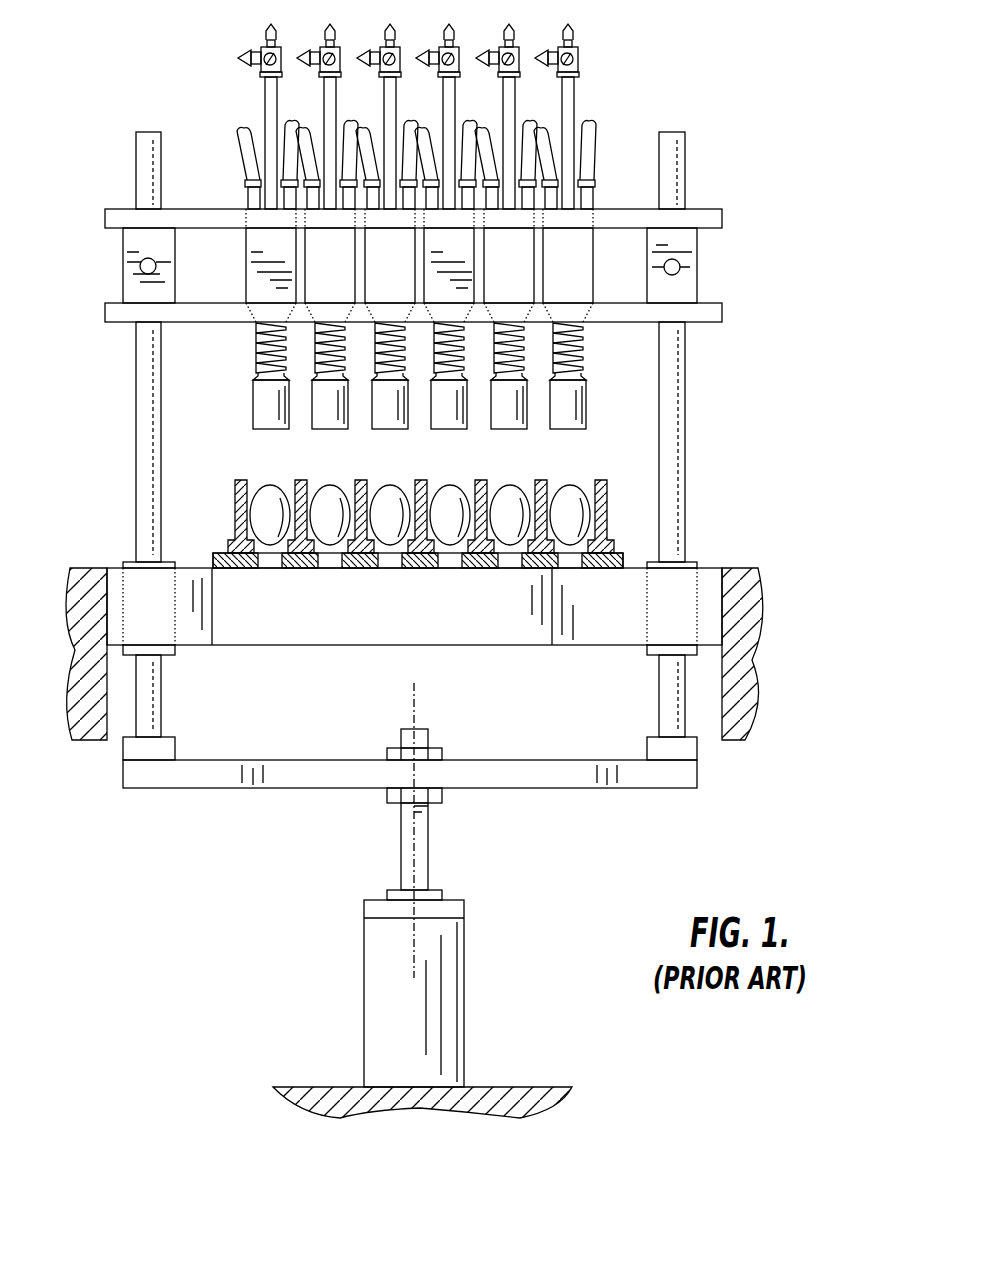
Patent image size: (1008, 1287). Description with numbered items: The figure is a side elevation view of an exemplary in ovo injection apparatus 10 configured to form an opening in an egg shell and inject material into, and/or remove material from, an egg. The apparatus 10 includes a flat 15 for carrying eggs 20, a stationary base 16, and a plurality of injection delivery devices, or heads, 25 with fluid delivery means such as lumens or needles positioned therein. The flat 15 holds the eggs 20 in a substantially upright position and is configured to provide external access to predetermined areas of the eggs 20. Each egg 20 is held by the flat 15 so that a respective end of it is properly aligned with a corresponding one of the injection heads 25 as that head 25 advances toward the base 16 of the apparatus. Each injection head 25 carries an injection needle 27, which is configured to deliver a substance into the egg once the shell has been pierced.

The in ovo injection apparatus 10 is at (491, 571).
The flat 15 is at (605, 490).
The stationary base 16 is at (698, 595).
The eggs 20 is at (332, 490).
The injection delivery devices (heads) 25 is at (587, 420).
The injection needle 27 is at (578, 70).